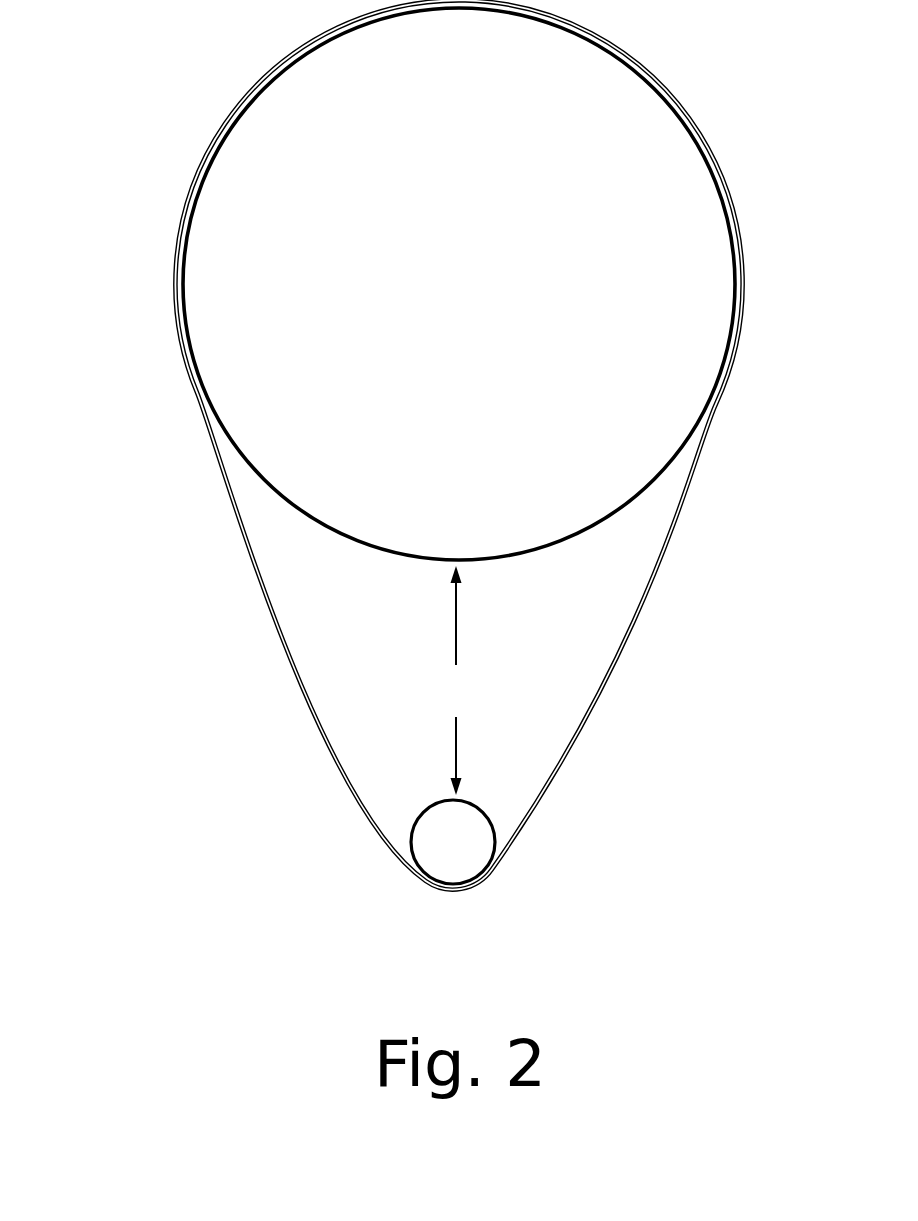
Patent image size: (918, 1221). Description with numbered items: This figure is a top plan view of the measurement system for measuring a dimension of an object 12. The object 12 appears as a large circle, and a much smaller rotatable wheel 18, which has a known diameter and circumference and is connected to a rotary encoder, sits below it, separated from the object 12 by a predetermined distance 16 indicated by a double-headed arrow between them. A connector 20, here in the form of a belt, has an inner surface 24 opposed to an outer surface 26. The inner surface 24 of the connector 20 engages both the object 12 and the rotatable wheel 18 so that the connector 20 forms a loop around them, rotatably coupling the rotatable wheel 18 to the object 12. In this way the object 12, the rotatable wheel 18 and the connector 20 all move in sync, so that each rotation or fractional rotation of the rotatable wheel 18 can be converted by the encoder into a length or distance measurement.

The object 12 is at (478, 311).
The predetermined distance 16 is at (461, 680).
The rotatable wheel 18 is at (476, 857).
The connector 20 is at (422, 445).
The inner surface 24 is at (275, 606).
The outer surface 26 is at (277, 638).